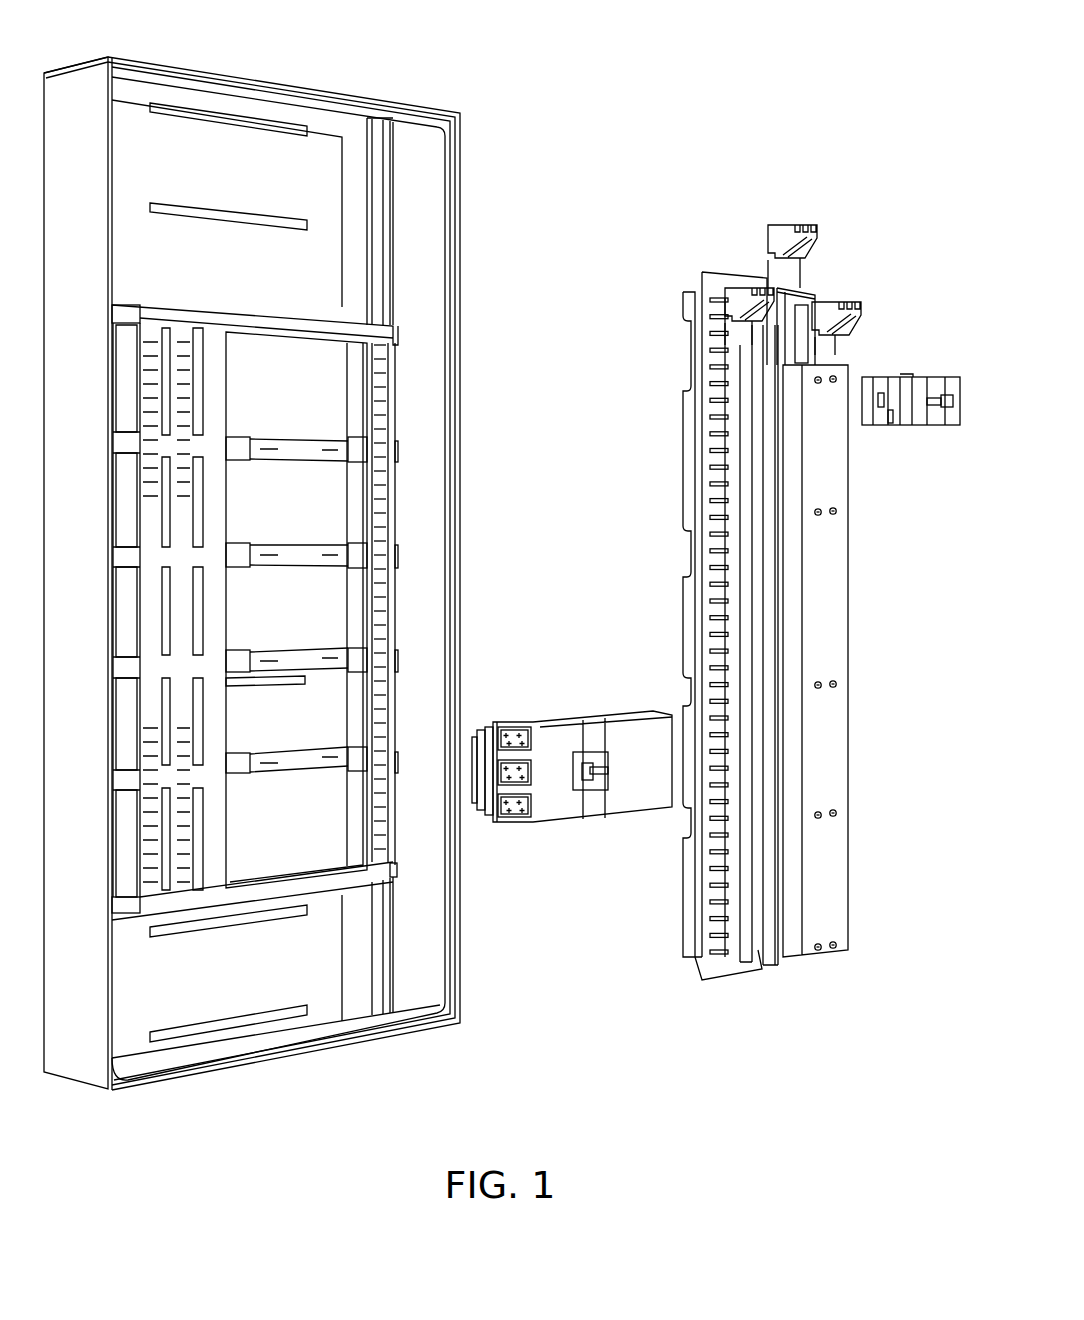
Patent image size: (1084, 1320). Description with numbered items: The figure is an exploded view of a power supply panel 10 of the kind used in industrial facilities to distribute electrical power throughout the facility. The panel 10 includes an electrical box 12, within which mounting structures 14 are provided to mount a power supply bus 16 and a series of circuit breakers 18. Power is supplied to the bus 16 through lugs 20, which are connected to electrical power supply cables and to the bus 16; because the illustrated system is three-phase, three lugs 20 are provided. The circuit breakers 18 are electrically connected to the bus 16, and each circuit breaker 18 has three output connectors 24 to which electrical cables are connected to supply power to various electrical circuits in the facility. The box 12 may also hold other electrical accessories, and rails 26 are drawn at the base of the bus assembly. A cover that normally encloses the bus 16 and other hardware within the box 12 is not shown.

The power supply panel 10 is at (658, 78).
The electrical box 12 is at (388, 102).
The mounting structures 14 is at (188, 312).
The power supply bus 16 is at (765, 651).
The circuit breakers 18 is at (716, 594).
The lugs 20 is at (800, 225).
The output connectors 24 is at (512, 736).
The rail 26 is at (738, 962).